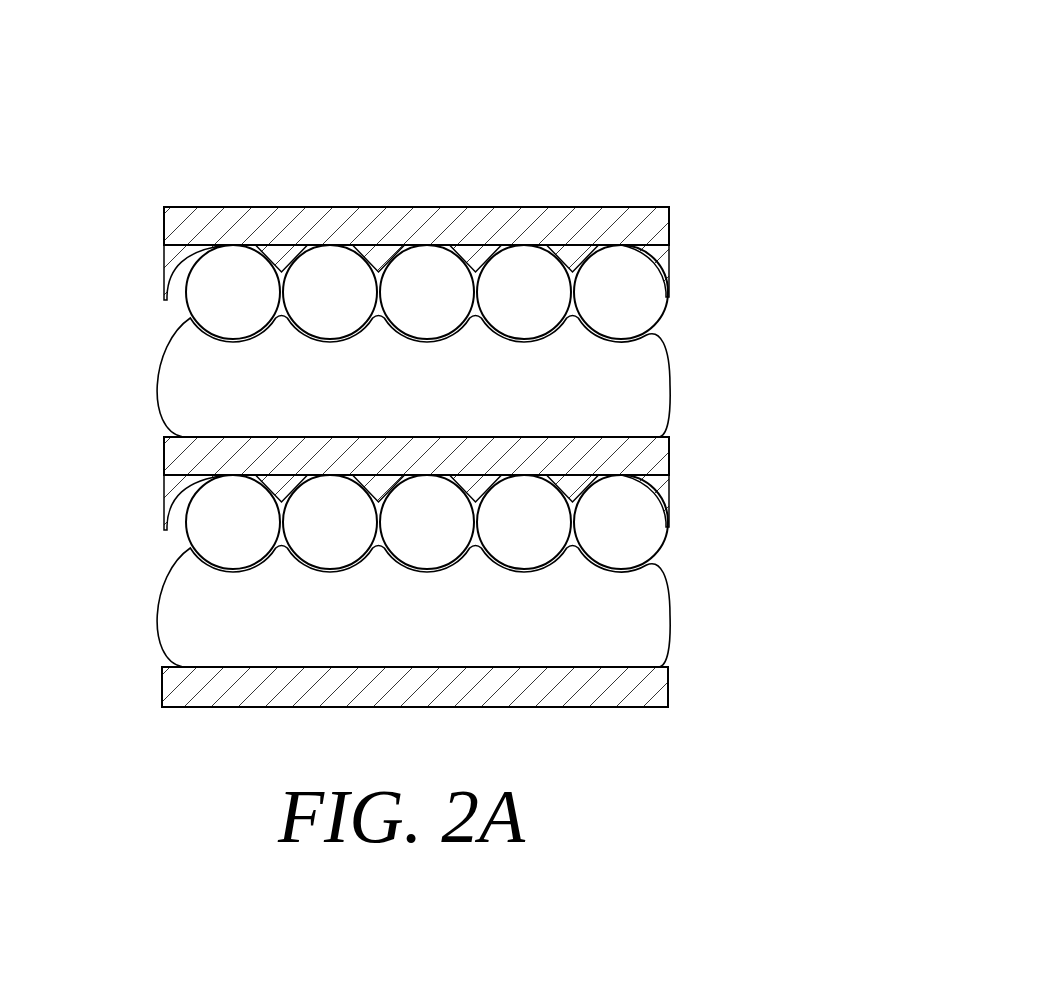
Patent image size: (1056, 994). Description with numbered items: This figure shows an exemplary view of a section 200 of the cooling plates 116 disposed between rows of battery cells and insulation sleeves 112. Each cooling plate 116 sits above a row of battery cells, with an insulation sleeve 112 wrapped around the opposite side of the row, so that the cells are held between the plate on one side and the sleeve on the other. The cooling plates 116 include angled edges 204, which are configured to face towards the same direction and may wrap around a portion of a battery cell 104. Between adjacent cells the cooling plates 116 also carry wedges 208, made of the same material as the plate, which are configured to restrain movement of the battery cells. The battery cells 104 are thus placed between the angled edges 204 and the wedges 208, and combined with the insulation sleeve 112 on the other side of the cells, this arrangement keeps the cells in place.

The section 200 is at (245, 153).
The cooling plate 116 is at (698, 57).
The wedge 208 is at (788, 128).
The angled edge 204 is at (915, 245).
The battery cell 104 is at (620, 290).
The insulation sleeve 112 is at (1020, 483).